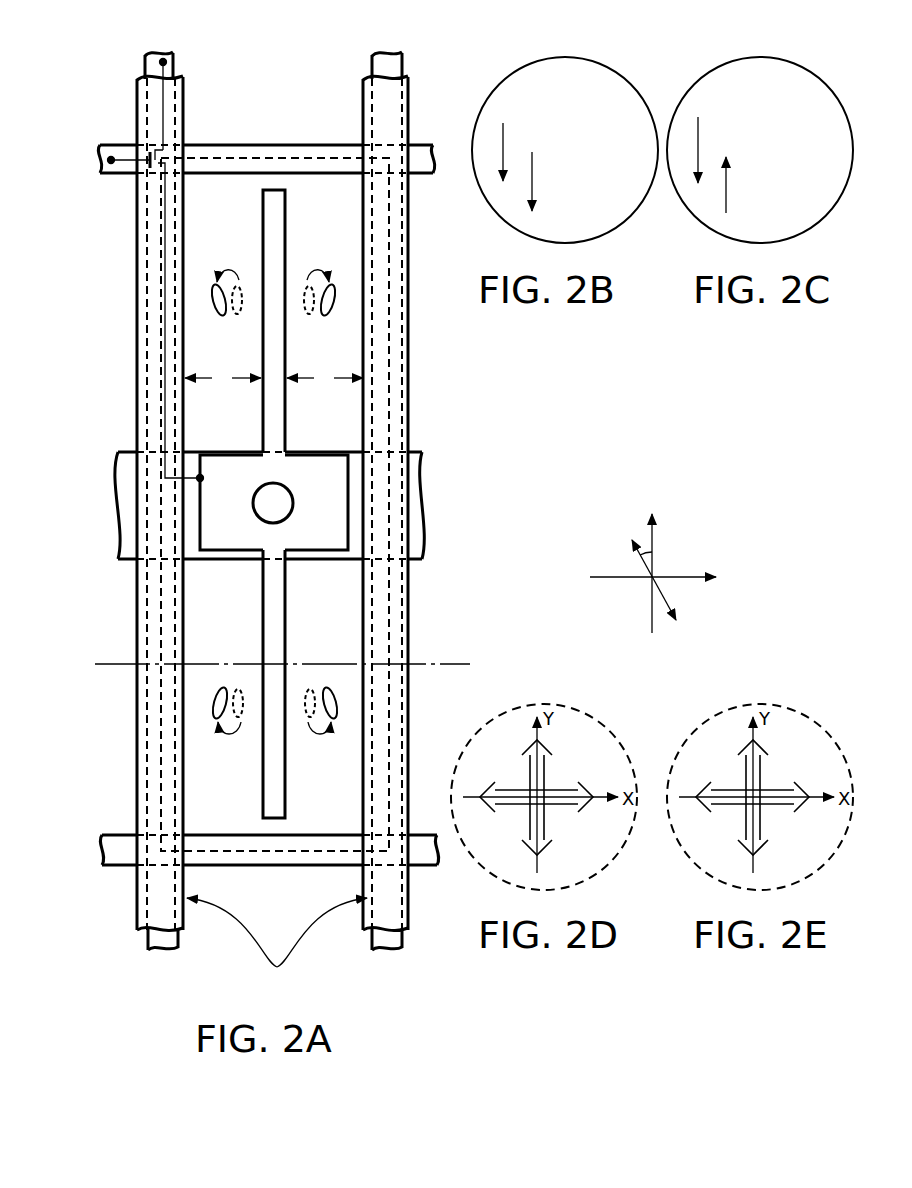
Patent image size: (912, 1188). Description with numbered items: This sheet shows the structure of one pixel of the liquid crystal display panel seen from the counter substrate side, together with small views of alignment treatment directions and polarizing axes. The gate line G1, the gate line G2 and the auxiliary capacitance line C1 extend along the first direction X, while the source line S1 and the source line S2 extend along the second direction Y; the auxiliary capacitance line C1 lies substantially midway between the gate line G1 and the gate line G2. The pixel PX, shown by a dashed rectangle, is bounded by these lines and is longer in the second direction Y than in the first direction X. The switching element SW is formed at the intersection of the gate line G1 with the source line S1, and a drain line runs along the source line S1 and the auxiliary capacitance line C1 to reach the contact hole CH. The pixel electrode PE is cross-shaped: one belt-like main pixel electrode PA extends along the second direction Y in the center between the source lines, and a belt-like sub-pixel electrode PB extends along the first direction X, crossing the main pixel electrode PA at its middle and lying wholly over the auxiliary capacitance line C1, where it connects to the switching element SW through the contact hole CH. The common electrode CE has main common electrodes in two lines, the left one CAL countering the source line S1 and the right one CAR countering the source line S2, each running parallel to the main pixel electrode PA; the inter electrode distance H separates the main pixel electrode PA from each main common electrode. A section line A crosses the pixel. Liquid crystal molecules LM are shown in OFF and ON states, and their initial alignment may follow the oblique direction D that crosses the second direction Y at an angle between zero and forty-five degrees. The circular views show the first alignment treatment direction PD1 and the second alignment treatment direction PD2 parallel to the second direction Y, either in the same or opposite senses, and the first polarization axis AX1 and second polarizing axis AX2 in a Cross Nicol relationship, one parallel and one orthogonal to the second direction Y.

In FIG. 2A, the source line S1 is at (156, 60).
In FIG. 2A, the source line S2 is at (389, 60).
In FIG. 2A, the gate line G1 is at (98, 160).
In FIG. 2A, the gate line G2 is at (100, 850).
In FIG. 2A, the auxiliary capacitance line C1 is at (116, 511).
In FIG. 2A, the pixel PX is at (288, 144).
In FIG. 2A, the switching element SW is at (158, 174).
In FIG. 2A, the pixel electrode PE is at (329, 504).
In FIG. 2A, the main pixel electrode PA is at (276, 344).
In FIG. 2A, the sub-pixel electrode PB is at (230, 538).
In FIG. 2A, the contact hole CH is at (292, 486).
In FIG. 2A, the main common electrode (left-hand side) CAL is at (139, 765).
In FIG. 2A, the main common electrode (right-hand side) CAR is at (411, 616).
In FIG. 2A, the common electrode CE is at (277, 947).
In FIG. 2A, the inter electrode distance H is at (274, 378).
In FIG. 2A, the section line A- A is at (271, 665).
In FIG. 2A, the liquid crystal molecule LM is at (514, 502).
In FIG. 2A, the initial alignment direction D is at (630, 539).
In FIG. 2B, the first alignment treatment direction PD1 is at (505, 128).
In FIG. 2C, the first alignment treatment direction PD1 is at (700, 140).
In FIG. 2B, the second alignment treatment direction PD2 is at (534, 160).
In FIG. 2C, the second alignment treatment direction PD2 is at (728, 190).
In FIG. 2D, the first polarization axis AX1 is at (568, 806).
In FIG. 2E, the first polarization axis AX1 is at (762, 758).
In FIG. 2D, the second polarizing axis AX2 is at (546, 758).
In FIG. 2E, the second polarizing axis AX2 is at (784, 806).